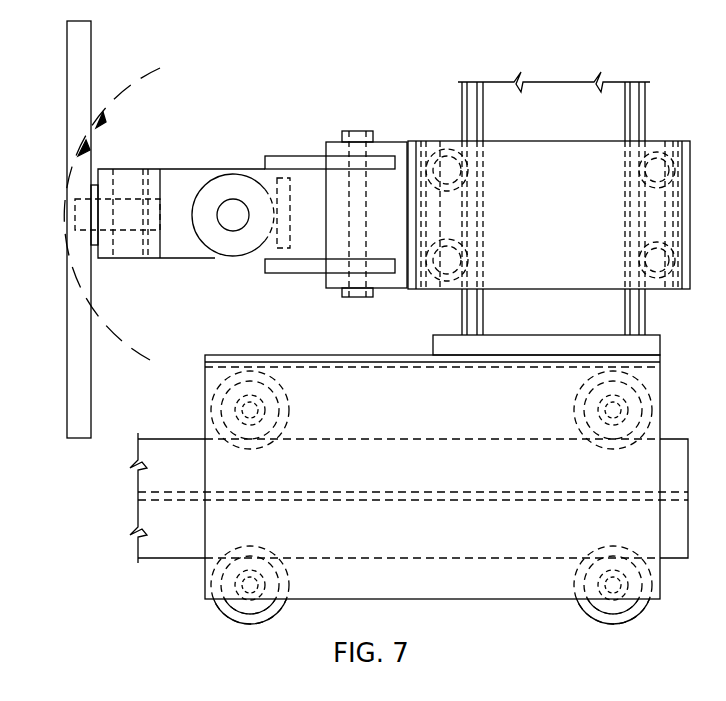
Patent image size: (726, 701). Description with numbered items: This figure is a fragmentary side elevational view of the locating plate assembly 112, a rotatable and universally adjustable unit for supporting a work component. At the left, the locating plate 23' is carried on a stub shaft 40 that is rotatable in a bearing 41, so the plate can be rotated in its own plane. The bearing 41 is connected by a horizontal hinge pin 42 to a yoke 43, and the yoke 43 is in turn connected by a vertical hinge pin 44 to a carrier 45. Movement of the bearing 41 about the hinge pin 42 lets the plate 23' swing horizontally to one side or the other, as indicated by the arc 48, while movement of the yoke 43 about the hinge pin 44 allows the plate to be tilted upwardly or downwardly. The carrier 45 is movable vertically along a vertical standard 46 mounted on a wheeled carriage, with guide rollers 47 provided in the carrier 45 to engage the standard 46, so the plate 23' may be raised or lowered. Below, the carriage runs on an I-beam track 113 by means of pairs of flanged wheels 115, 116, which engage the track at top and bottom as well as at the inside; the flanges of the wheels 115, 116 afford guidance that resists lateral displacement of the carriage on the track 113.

The locating plate 23' is at (64, 229).
The horizontal side movement indication 48 is at (88, 136).
The horizontal hinge pin 42 is at (194, 188).
The stub shaft 40 is at (122, 232).
The bearing 41 is at (150, 258).
The yoke 43 is at (311, 247).
The vertical hinge pin 44 is at (358, 298).
The carrier 45 is at (573, 282).
The vertical standard 46 is at (637, 122).
The guide rollers 47 is at (437, 148).
The I-beam track 113 is at (186, 438).
The locating plate assembly 112 is at (125, 456).
The flanged wheels 115 is at (289, 404).
The flanged wheels 116 is at (290, 578).